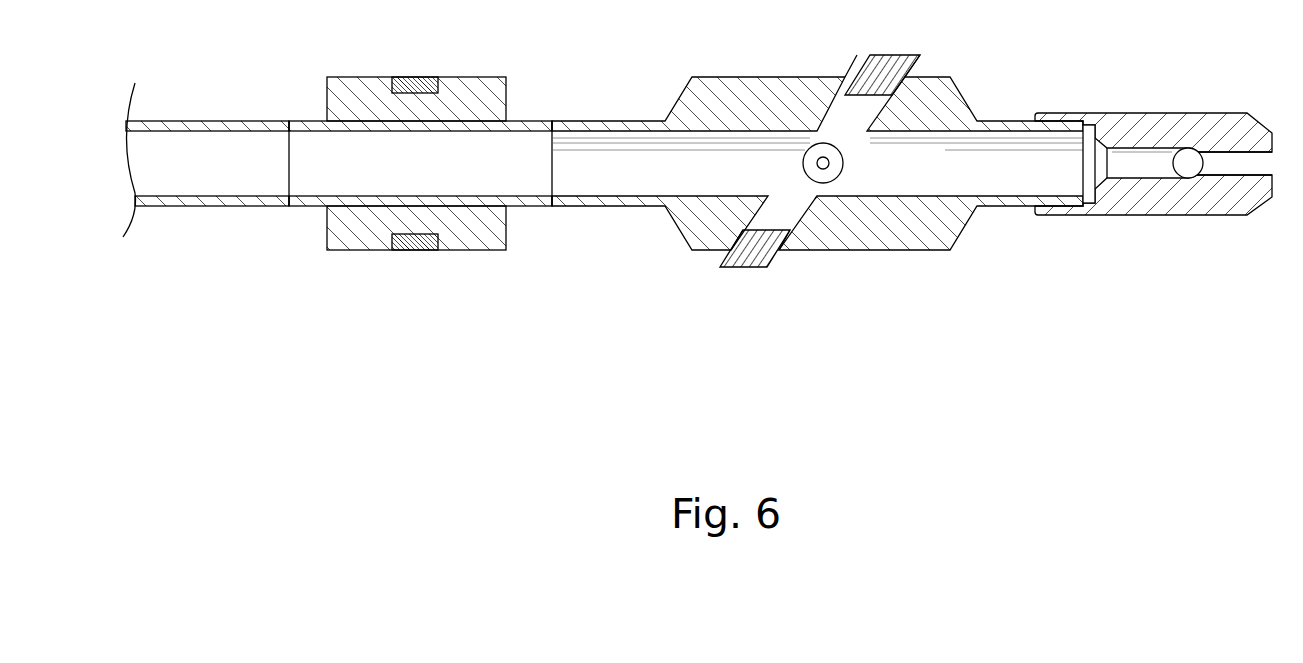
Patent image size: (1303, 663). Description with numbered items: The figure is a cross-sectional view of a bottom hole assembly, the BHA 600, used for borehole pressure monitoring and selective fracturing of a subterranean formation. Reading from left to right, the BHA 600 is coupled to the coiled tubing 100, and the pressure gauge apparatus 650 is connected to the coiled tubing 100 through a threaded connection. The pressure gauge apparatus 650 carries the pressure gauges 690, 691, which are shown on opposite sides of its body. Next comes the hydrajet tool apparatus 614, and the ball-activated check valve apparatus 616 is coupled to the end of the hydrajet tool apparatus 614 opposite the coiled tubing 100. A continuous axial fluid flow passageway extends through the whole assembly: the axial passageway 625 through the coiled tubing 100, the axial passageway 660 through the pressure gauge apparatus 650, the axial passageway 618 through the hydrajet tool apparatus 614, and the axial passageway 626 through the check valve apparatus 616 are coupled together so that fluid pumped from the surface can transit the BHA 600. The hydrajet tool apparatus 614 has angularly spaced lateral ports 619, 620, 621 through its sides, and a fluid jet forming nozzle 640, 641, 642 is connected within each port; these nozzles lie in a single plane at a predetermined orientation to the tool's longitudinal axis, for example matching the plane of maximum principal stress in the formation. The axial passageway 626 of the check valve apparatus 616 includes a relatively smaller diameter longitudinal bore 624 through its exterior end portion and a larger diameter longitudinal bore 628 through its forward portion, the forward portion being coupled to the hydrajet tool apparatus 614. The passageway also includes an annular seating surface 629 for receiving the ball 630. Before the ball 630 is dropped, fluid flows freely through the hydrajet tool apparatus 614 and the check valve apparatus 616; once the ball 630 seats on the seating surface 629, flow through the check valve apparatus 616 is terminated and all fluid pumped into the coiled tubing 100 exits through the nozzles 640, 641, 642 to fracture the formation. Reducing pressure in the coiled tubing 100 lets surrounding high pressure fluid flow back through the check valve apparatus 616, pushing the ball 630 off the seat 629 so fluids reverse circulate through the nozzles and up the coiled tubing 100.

The bottom hole assembly 600 is at (1200, 333).
The coiled tubing 100 is at (170, 208).
The axial passageway through the coiled tubing 625 is at (183, 148).
The axial passageway through the pressure gauge apparatus 660 is at (328, 142).
The pressure gauge apparatus 650 is at (356, 76).
The pressure gauge 690 is at (413, 77).
The pressure gauge 691 is at (413, 250).
The hydrajet tool apparatus 614 is at (728, 77).
The axial passageway through the hydrajet tool apparatus 618 is at (617, 173).
The lateral port 620 is at (842, 118).
The fluid jet forming nozzle 640 is at (892, 55).
The fluid jet forming nozzle 641 is at (838, 158).
The lateral port 619 is at (838, 173).
The lateral port 621 is at (785, 205).
The fluid jet forming nozzle 642 is at (742, 268).
The ball-activated check valve apparatus 616 is at (1140, 113).
The axial passageway through the ball-activated check valve apparatus 626 is at (1102, 200).
The larger diameter longitudinal bore 628 is at (1150, 172).
The annular seating surface 629 is at (1198, 150).
The ball 630 is at (1190, 172).
The smaller diameter longitudinal bore 624 is at (1240, 168).